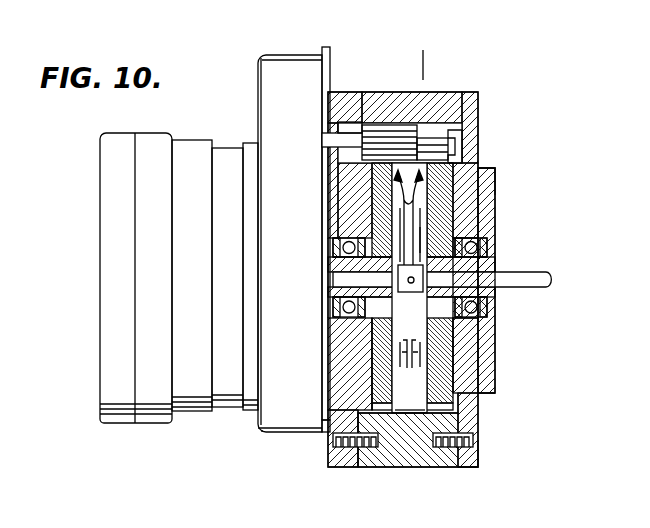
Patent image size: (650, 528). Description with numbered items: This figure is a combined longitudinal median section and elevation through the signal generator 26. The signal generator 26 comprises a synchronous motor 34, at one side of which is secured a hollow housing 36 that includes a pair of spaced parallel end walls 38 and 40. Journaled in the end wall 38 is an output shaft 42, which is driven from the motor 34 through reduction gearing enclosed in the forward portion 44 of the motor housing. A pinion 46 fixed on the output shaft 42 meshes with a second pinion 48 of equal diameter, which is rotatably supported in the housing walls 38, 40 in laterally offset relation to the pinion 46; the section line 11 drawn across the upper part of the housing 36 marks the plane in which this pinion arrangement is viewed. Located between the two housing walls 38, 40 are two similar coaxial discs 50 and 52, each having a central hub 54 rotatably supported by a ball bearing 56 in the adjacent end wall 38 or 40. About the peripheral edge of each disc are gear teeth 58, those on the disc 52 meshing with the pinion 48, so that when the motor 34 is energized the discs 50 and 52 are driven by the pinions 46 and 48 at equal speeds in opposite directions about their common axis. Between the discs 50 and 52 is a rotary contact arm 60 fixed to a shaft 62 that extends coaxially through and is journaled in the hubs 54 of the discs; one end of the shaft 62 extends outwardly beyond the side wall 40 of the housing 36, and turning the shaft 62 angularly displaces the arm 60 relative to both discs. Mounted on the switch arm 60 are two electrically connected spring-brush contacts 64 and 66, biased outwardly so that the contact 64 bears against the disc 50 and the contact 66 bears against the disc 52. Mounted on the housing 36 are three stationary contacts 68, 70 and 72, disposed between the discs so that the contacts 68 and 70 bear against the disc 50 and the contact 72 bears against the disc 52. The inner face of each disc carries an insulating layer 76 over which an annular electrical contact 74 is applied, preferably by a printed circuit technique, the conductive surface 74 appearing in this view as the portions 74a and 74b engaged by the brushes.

The signal generator 26 is at (88, 222).
The synchronous motor 34 is at (165, 289).
The forward portion of the motor housing 44 is at (302, 68).
The hollow housing 36 is at (460, 92).
The pinion 46 is at (380, 128).
The second pinion 48 is at (460, 137).
The output shaft 42 is at (330, 143).
The central hub 54 is at (370, 322).
The ball bearing 56 is at (345, 299).
The shaft 62 is at (533, 271).
The electrical contact 64 is at (385, 207).
The insulating layer 76 is at (375, 352).
The disc 52 is at (495, 357).
The rotary contact arm 60 is at (498, 220).
The electrical contact 66 is at (497, 183).
The stationary contact 72 is at (495, 384).
The annular electrical contact 74 is at (400, 205).
The spring arm 74a is at (397, 183).
The spring arm 74b is at (403, 222).
The stationary contact 68 is at (407, 344).
The disc 50 is at (330, 390).
The end wall 38 is at (332, 472).
The gear teeth 58 is at (380, 467).
The stationary contact 70 is at (408, 345).
The end wall 40 is at (467, 468).
The section line 11 is at (437, 61).